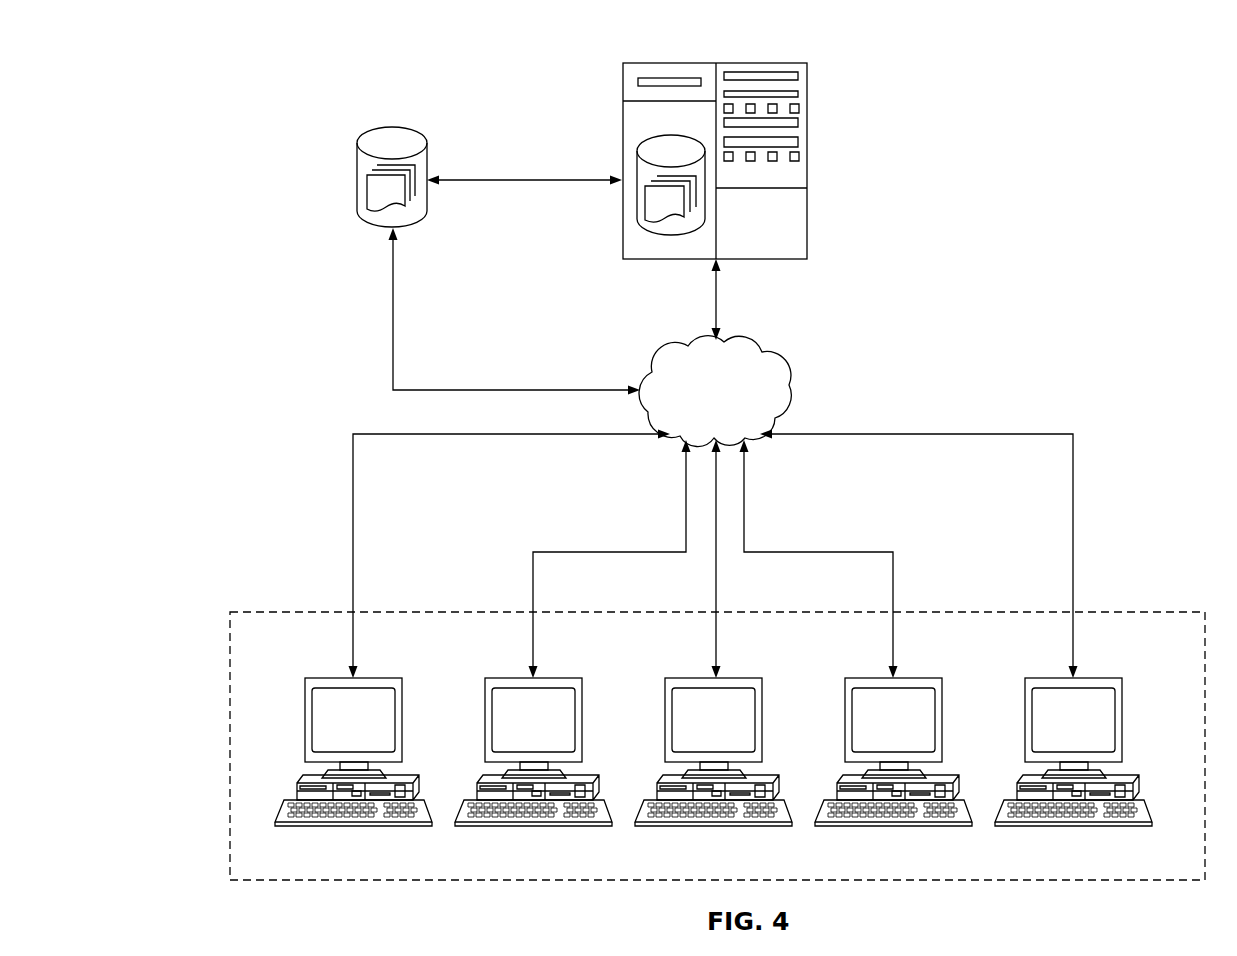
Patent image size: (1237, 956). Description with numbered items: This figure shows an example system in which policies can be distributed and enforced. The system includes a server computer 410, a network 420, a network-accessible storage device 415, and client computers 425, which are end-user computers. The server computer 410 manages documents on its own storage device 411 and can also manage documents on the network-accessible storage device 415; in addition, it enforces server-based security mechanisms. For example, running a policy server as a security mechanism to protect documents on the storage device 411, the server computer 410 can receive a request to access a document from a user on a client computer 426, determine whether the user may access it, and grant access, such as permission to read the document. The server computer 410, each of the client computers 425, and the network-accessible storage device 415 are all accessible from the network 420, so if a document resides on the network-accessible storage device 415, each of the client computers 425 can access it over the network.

The server computer 410 is at (722, 161).
The storage device 411 is at (622, 163).
The network-accessible storage device 415 is at (355, 172).
The network 420 is at (667, 348).
The client computers 425 is at (270, 604).
The client computer 426 is at (858, 678).